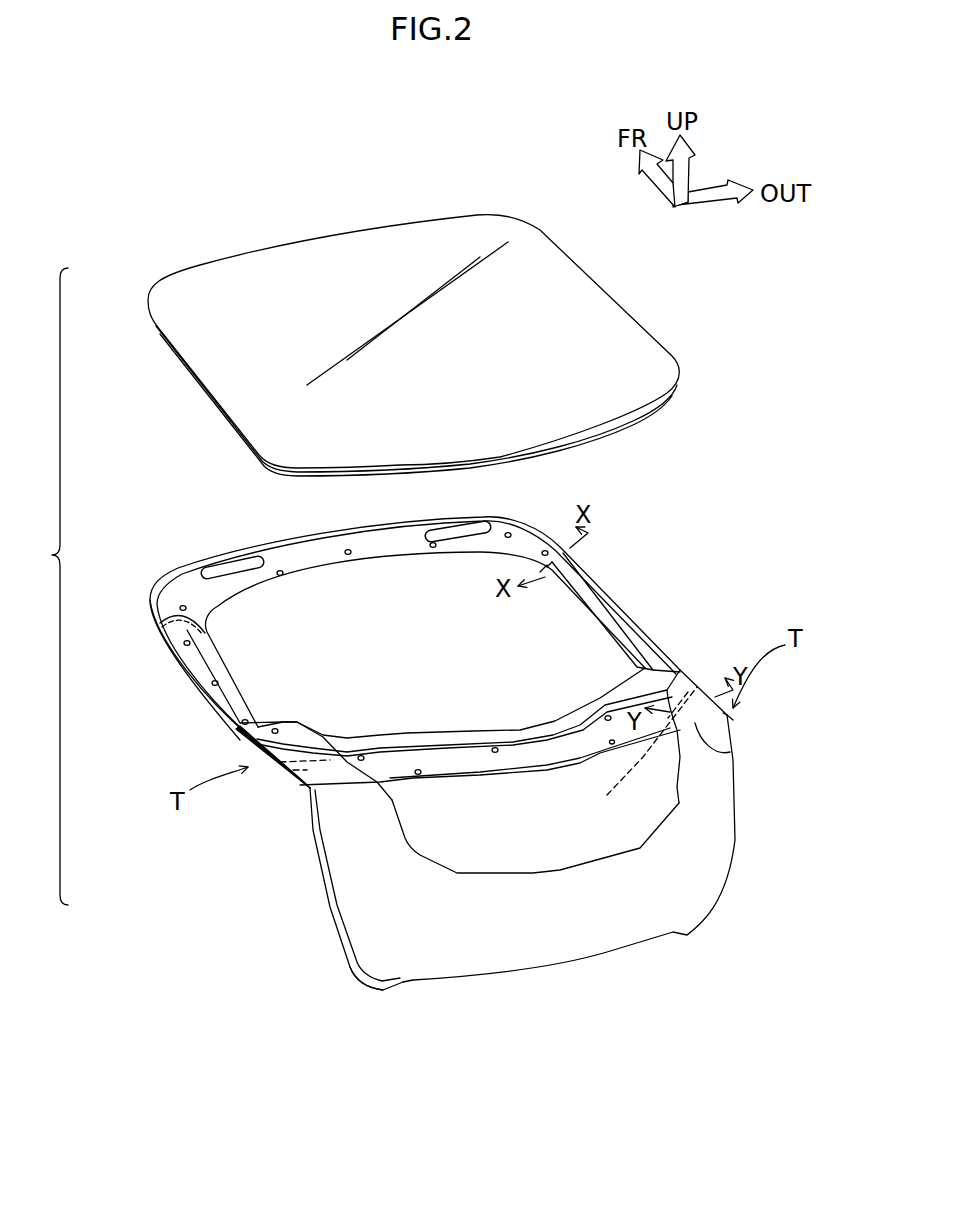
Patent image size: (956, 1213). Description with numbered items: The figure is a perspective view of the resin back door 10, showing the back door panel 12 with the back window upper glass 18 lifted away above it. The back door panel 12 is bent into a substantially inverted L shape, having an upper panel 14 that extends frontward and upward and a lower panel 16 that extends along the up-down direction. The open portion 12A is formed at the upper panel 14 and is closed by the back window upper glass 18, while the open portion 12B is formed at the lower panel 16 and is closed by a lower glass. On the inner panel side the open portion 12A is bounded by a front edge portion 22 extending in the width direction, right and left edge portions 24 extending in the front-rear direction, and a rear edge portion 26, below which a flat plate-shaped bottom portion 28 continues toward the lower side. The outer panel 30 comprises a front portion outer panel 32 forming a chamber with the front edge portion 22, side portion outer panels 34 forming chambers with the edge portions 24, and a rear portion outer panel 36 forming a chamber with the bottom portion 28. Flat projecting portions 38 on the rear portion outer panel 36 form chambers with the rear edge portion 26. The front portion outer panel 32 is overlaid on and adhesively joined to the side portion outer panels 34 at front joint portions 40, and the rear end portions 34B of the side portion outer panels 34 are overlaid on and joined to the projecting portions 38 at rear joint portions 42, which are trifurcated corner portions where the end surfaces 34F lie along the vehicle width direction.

The resin back door 10 is at (182, 525).
The back door panel 12 is at (655, 615).
The open portion 12A is at (263, 603).
The open portion 12B is at (665, 810).
The upper panel 14 is at (195, 722).
The lower panel 16 is at (333, 930).
The back window upper glass 18 is at (582, 307).
The front edge portion 22 is at (318, 590).
The right and left edge portions 24 is at (588, 623).
The rear edge portion 26 is at (567, 735).
The bottom portion 28 is at (348, 967).
The outer panel 30 is at (370, 547).
The front portion outer panel 32 is at (287, 555).
The side portion outer panels 34 is at (580, 575).
The rear end portions 34B is at (340, 773).
The end surfaces 34F is at (352, 783).
The rear portion outer panel 36 is at (597, 933).
The projecting portions 38 is at (280, 773).
The front joint portions 40 is at (547, 587).
The rear joint portions 42 is at (307, 788).